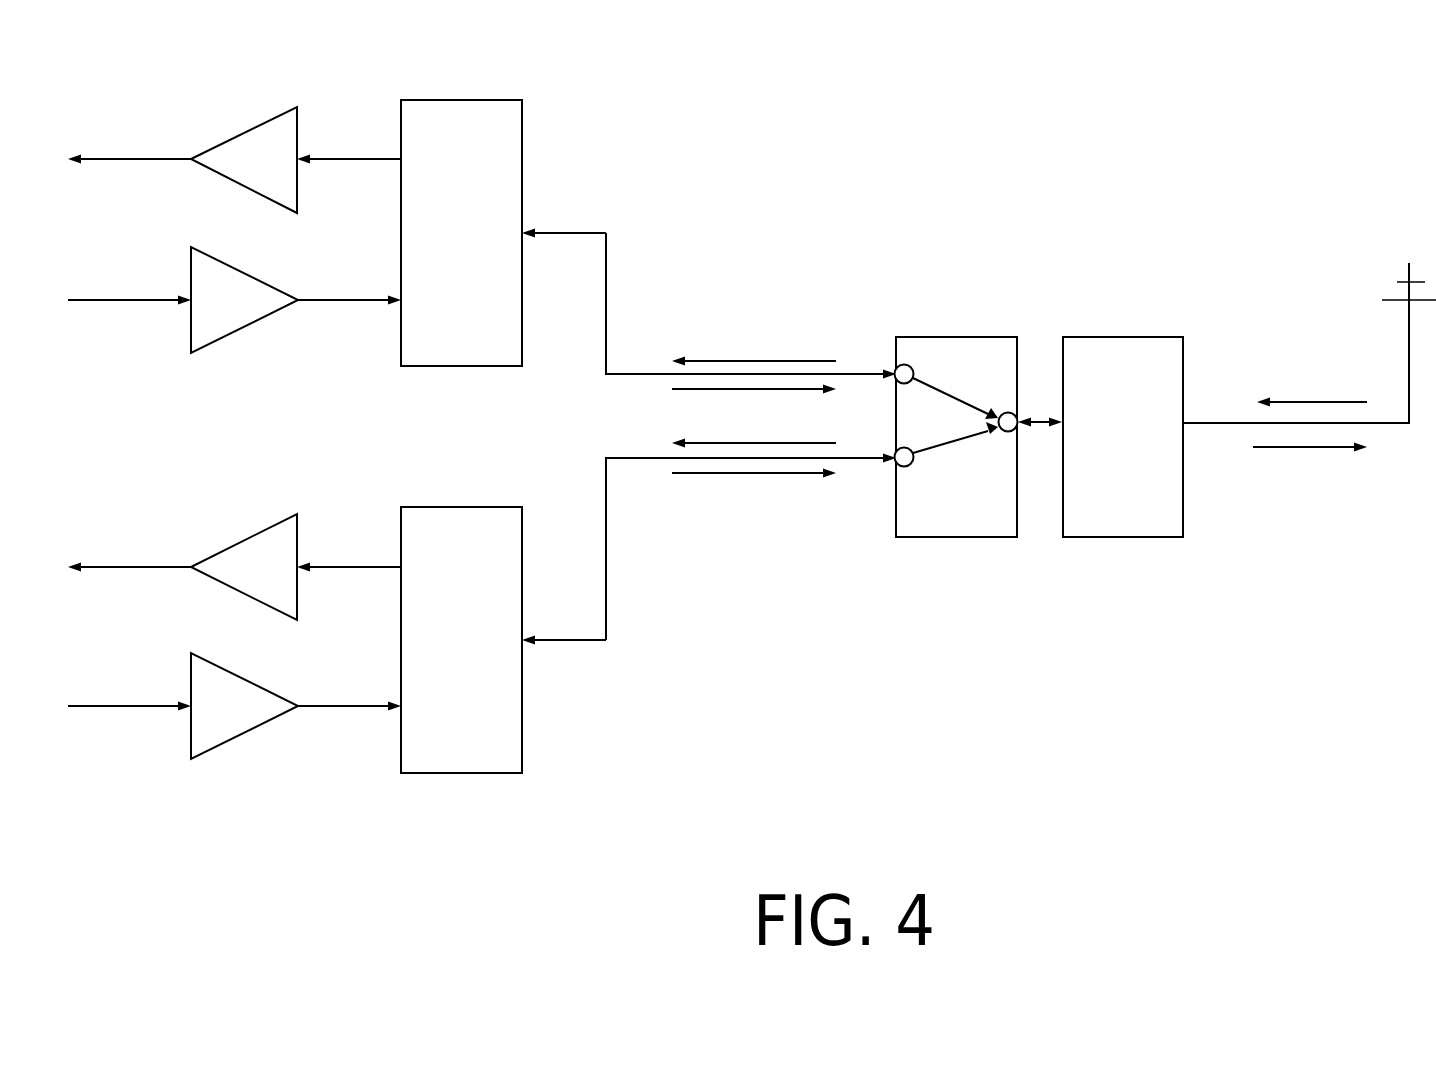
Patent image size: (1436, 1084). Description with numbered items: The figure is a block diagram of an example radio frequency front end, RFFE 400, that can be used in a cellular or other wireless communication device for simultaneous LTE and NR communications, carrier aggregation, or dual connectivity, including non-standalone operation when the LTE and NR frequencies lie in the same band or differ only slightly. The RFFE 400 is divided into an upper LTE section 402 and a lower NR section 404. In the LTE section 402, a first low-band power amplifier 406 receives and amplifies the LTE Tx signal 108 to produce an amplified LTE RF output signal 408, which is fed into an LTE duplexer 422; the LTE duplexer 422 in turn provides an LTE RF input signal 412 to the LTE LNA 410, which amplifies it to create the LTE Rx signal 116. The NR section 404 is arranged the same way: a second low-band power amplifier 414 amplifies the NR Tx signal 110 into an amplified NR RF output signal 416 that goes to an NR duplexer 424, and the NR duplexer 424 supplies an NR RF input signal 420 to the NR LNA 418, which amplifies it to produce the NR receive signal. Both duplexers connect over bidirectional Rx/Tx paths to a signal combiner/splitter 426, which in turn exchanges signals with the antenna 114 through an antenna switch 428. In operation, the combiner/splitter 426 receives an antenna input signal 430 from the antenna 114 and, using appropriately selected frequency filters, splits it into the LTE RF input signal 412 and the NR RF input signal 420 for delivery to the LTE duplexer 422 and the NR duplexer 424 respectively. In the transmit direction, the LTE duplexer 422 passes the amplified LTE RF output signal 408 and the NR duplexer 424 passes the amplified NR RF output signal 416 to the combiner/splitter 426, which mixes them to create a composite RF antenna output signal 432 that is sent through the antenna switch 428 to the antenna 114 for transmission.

The RFFE 400 is at (1128, 86).
The LTE section 402 is at (630, 143).
The NR section 404 is at (630, 727).
The LTE Rx signal 116 is at (128, 148).
The LTE Tx signal 108 is at (105, 298).
The NR Tx signal 110 is at (107, 704).
The first low-band power amplifier 406 is at (235, 277).
The amplified LTE RF output signal 408 is at (331, 297).
The LTE LNA 410 is at (257, 135).
The LTE RF input signal 412 is at (332, 158).
The second low-band power amplifier 414 is at (235, 680).
The amplified NR RF output signal 416 is at (332, 705).
The NR LNA 418 is at (257, 542).
The NR RF input signal 420 is at (331, 568).
The LTE duplexer 422 is at (490, 107).
The NR duplexer 424 is at (490, 513).
The combiner/splitter 426 is at (945, 343).
The antenna switch 428 is at (1137, 343).
The antenna 114 is at (1397, 282).
The antenna input signal 430 is at (1323, 400).
The composite RF antenna output signal 432 is at (1312, 450).